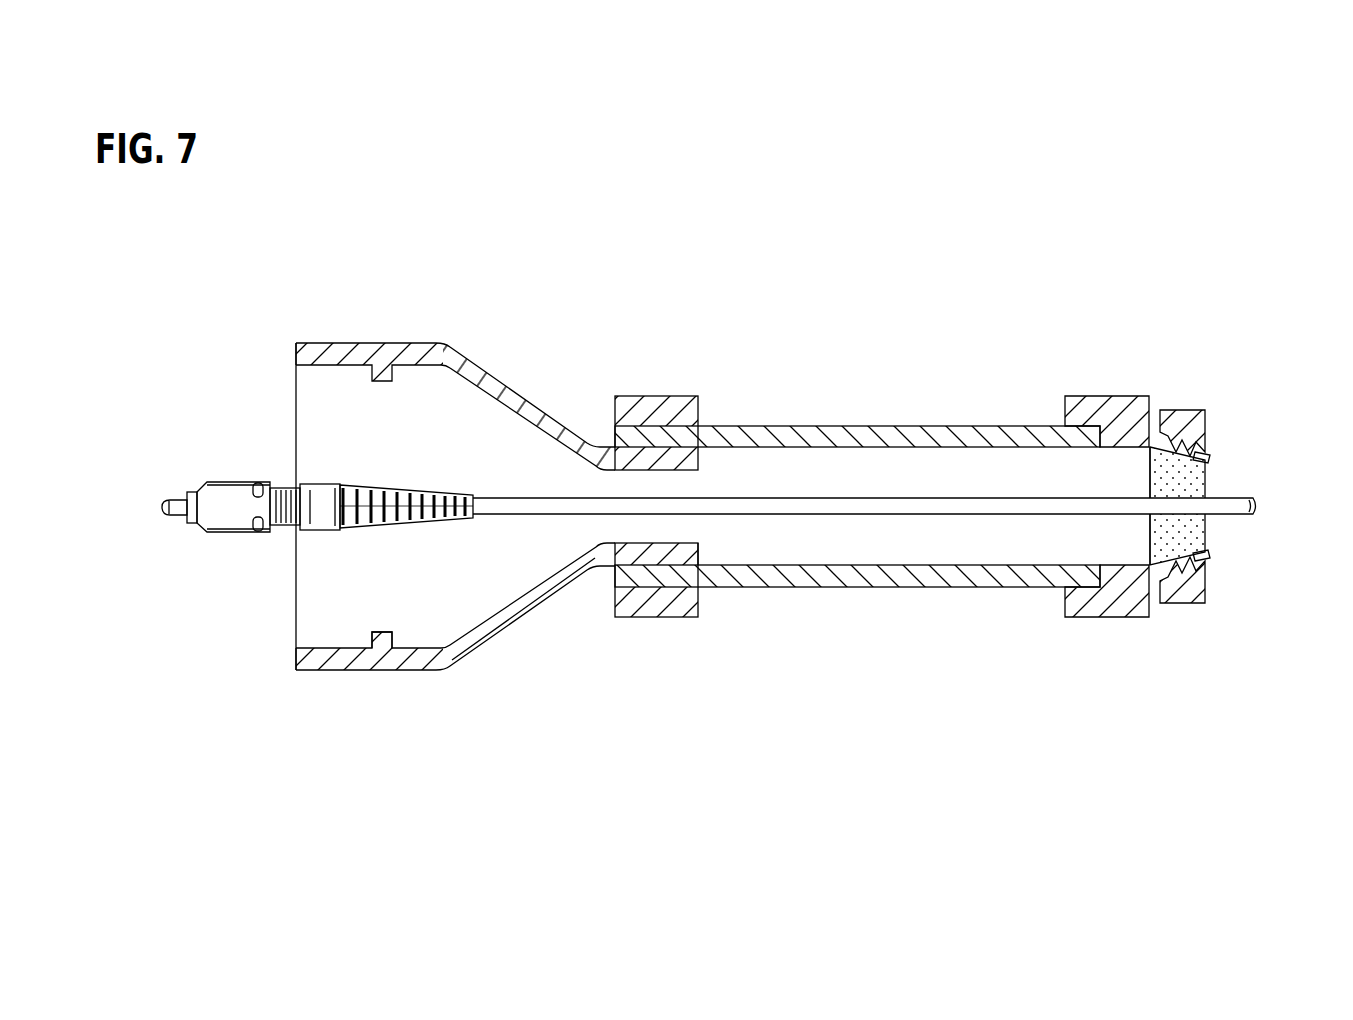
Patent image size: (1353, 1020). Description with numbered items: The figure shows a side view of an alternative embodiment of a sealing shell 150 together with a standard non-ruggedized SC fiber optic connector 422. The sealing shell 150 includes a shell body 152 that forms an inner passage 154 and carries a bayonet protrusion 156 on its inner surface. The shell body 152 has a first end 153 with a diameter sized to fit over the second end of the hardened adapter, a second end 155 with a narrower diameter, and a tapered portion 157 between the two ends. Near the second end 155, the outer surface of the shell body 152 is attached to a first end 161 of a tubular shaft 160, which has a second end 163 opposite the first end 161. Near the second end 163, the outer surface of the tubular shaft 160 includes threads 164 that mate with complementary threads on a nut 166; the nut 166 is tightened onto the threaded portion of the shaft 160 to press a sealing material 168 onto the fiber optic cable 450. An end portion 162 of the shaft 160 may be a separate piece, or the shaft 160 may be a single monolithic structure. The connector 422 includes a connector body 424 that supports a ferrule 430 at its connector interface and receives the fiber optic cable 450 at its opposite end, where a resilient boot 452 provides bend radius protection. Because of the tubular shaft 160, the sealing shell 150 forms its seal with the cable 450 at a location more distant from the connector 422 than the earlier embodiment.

The sealing shell 150 is at (803, 367).
The shell body 152 is at (408, 342).
The first end 153 is at (294, 350).
The inner passage 154 is at (480, 577).
The second end 155 is at (698, 553).
The bayonet protrusion 156 is at (397, 640).
The tapered portion 157 is at (527, 400).
The tubular shaft 160 is at (882, 425).
The first end 161 is at (615, 432).
The end portion 162 is at (1118, 396).
The second end 163 is at (1212, 457).
The threads 164 is at (1182, 436).
The nut 166 is at (1188, 603).
The sealing material 168 is at (1185, 542).
The fiber optic connector 422 is at (243, 463).
The connector body 424 is at (187, 493).
The ferrule 430 is at (177, 514).
The fiber optic cable 450 is at (888, 514).
The resilient boot 452 is at (368, 532).